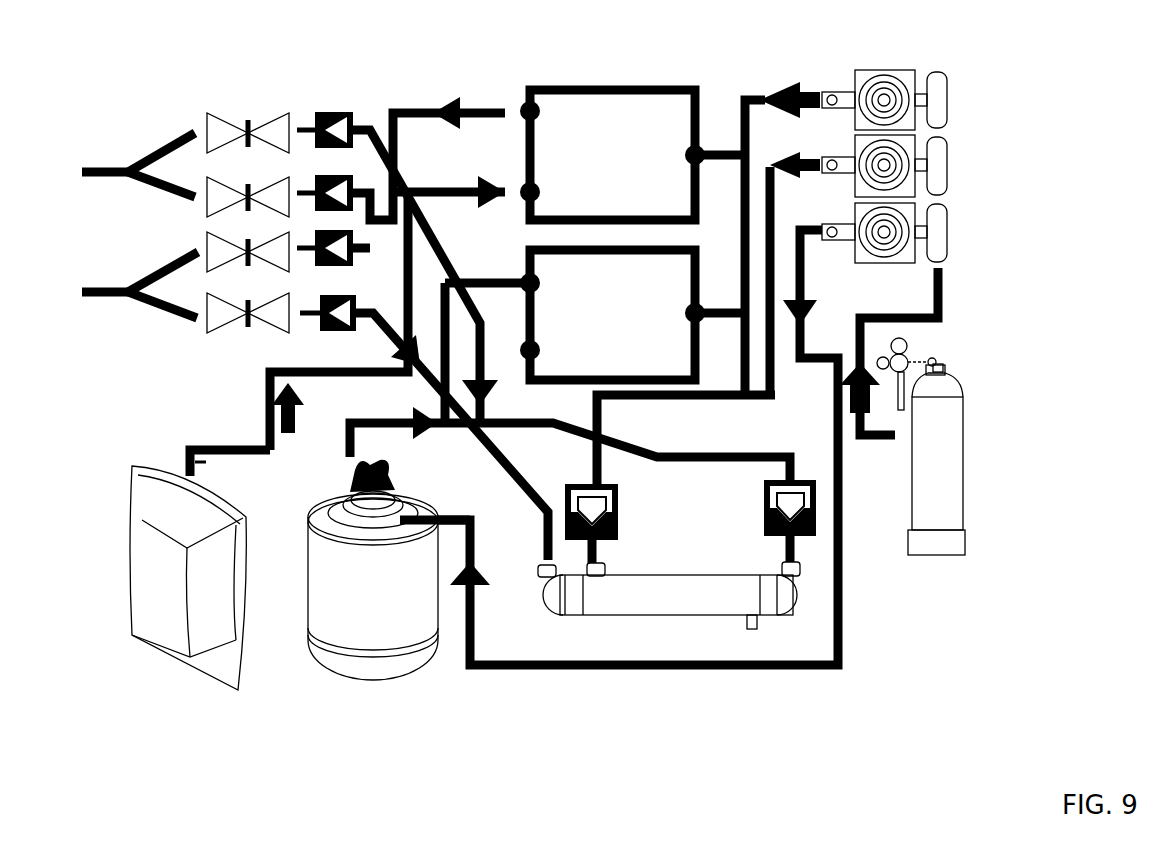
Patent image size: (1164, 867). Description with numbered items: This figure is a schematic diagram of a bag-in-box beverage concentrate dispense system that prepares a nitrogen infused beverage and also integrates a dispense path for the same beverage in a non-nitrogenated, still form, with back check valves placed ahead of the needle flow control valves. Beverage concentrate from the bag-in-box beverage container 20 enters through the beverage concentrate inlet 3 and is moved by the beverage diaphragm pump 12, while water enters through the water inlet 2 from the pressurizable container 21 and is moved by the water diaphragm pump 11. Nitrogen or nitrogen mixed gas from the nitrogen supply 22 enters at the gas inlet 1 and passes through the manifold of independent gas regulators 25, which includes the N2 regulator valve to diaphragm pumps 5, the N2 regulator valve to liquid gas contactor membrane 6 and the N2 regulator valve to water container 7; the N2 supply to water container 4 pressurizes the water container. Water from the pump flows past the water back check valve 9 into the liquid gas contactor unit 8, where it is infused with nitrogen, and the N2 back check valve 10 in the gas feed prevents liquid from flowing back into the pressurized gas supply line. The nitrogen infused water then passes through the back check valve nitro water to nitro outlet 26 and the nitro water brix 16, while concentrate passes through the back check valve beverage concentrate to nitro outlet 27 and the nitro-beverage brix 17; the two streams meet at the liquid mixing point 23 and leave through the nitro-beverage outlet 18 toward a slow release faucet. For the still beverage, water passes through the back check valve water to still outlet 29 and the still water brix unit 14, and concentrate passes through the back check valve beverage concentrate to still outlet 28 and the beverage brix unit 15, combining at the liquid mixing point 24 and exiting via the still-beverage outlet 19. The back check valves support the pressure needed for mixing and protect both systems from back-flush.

The gas inlet 1 is at (884, 440).
The water inlet 2 is at (385, 448).
The beverage concentrate inlet 3 is at (185, 450).
The N2 supply to water container 4 is at (806, 236).
The N2 regulator valve to diaphragm pumps 5 is at (818, 92).
The N2 regulator valve to liquid gas contactor membrane 6 is at (820, 158).
The N2 regulator valve to water container 7 is at (400, 512).
The liquid gas contactor unit 8 is at (673, 630).
The water back check valve 9 is at (765, 510).
The N2 back check valve 10 is at (632, 510).
The water diaphragm pump 11 is at (646, 338).
The beverage diaphragm pump 12 is at (652, 180).
The still water brix unit 14 is at (250, 118).
The beverage brix unit 15 is at (250, 185).
The nitro water brix 16 is at (240, 337).
The nitro-beverage brix 17 is at (240, 273).
The nitro-beverage outlet 18 is at (95, 288).
The still-beverage outlet 19 is at (90, 158).
The bag-in-box beverage container 20 is at (190, 650).
The pressurizable container 21 is at (358, 672).
The nitrogen supply 22 is at (970, 472).
The liquid mixing point 23 is at (128, 310).
The liquid mixing point 24 is at (145, 150).
The manifold of independent gas regulators 25 is at (900, 161).
The back check valve nitro water to nitro outlet 26 is at (317, 340).
The back check valve beverage concentrate to nitro outlet 27 is at (343, 270).
The back check valve beverage concentrate to still outlet 28 is at (355, 185).
The back check valve water to still outlet 29 is at (355, 115).